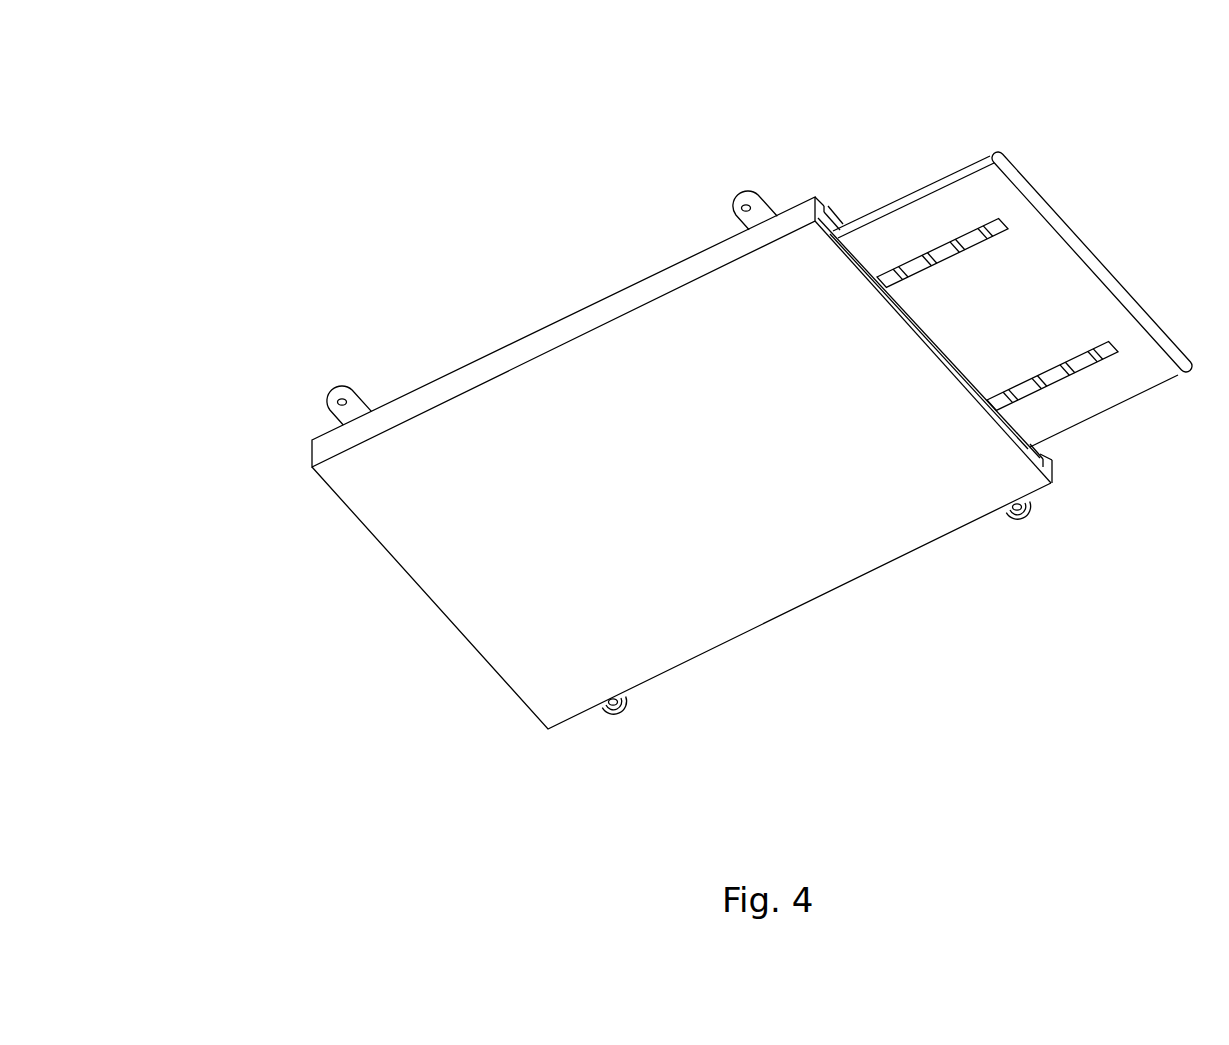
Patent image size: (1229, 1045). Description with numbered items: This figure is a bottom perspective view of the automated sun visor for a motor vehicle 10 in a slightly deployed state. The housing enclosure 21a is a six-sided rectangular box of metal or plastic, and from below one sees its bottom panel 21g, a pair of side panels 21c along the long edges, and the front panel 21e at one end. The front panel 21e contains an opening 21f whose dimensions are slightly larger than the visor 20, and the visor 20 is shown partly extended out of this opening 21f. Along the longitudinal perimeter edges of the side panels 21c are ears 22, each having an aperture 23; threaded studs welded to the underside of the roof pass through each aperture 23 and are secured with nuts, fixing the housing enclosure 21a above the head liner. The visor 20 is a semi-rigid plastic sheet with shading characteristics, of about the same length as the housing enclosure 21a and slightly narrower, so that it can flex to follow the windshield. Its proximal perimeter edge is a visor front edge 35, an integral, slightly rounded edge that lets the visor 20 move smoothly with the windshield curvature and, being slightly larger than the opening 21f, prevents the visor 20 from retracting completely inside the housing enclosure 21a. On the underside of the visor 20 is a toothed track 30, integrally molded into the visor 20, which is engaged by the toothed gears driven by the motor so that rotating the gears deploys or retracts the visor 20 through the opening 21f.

The automated sun visor for a motor vehicle 10 is at (257, 150).
The visor 20 is at (1074, 400).
The housing enclosure 21a is at (503, 232).
The side panels 21c is at (445, 386).
The front panel 21e is at (822, 202).
The opening 21f is at (838, 228).
The bottom panel 21g is at (676, 306).
The ears 22 is at (343, 388).
The aperture 23 is at (330, 404).
The toothed track 30 is at (997, 228).
The visor front edge 35 is at (1012, 172).